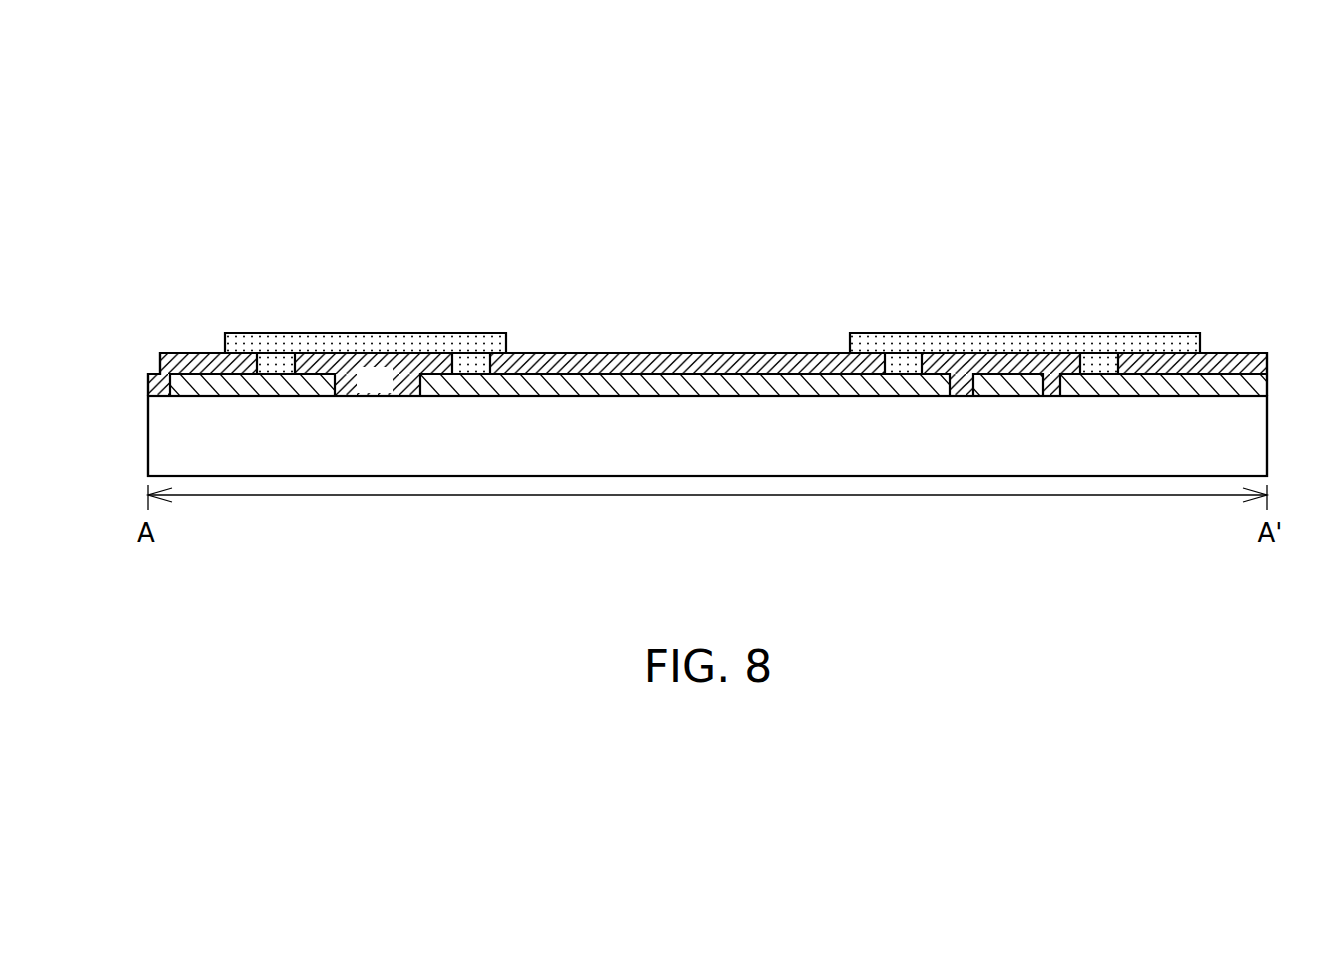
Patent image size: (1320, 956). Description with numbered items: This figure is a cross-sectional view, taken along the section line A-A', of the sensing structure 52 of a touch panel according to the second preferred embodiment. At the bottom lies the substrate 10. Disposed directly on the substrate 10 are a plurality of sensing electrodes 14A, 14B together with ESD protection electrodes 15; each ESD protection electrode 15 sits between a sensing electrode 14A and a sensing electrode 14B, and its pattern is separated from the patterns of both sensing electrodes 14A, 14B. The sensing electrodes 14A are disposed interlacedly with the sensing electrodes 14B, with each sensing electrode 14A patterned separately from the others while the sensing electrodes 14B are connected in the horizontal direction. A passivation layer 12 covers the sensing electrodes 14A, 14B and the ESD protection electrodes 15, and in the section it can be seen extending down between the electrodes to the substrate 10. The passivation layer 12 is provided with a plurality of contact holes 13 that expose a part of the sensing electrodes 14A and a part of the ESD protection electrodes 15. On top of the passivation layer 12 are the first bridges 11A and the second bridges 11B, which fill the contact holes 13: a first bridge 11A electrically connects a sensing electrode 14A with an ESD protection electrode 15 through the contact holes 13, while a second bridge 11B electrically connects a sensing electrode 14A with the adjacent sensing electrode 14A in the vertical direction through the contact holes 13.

The substrate 10 is at (667, 448).
The passivation layer 12 is at (362, 390).
The contact holes 13 is at (273, 360).
The ESD protection electrode 15 is at (217, 384).
The sensing electrode 14A is at (757, 387).
The sensing electrode 14B is at (1012, 383).
The first bridge 11A is at (370, 343).
The second bridge 11B is at (960, 343).
The sensing structure 52 is at (1105, 158).